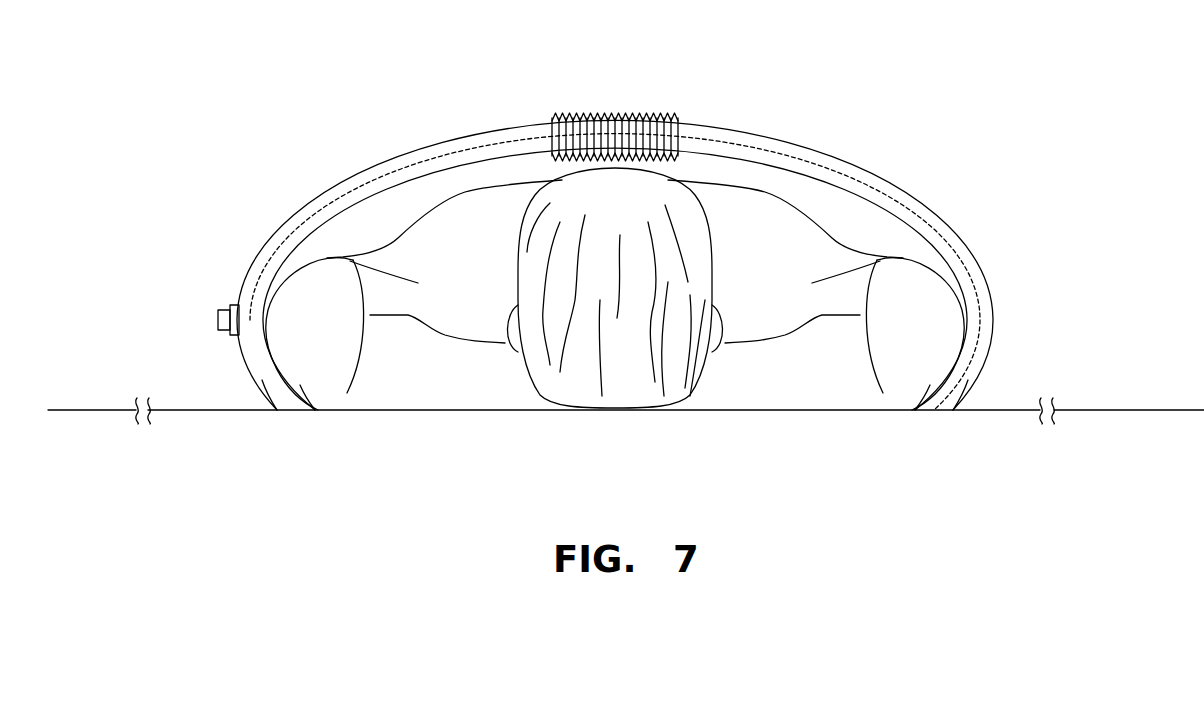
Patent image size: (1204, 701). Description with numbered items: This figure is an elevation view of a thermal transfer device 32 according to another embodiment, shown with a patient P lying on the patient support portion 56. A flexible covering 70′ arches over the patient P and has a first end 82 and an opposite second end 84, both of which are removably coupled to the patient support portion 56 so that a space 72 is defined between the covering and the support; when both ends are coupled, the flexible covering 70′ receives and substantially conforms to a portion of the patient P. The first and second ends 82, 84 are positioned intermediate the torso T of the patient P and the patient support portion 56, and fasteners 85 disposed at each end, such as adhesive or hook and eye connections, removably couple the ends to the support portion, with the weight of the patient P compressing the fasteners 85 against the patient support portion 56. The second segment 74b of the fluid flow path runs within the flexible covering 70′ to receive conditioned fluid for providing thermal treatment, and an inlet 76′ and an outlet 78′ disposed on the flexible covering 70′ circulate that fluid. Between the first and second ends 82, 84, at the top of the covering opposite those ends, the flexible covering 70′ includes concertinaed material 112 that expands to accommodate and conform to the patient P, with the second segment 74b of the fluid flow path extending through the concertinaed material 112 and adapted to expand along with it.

The thermal transfer device 32 is at (918, 124).
The patient support portion 56 is at (82, 406).
The flexible covering 70′ is at (376, 161).
The space 72 is at (700, 172).
The second segment of the fluid flow path 74b is at (445, 152).
The inlet 76′ is at (222, 315).
The outlet 78′ is at (224, 316).
The first end 82 is at (287, 411).
The second end 84 is at (918, 411).
The fasteners 85 is at (302, 411).
The concertinaed material 112 is at (632, 99).
The patient P is at (483, 377).
The torso T is at (522, 384).